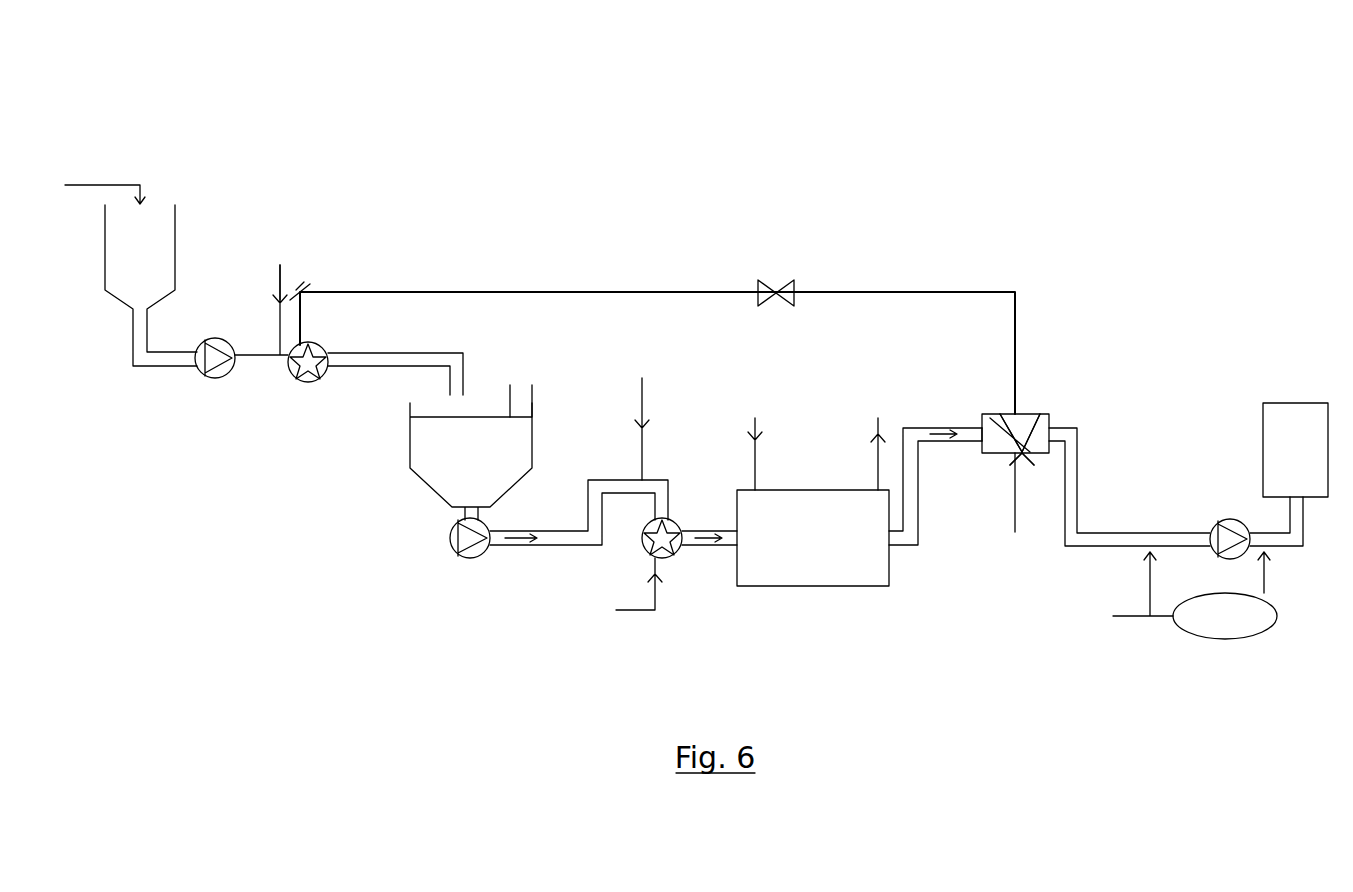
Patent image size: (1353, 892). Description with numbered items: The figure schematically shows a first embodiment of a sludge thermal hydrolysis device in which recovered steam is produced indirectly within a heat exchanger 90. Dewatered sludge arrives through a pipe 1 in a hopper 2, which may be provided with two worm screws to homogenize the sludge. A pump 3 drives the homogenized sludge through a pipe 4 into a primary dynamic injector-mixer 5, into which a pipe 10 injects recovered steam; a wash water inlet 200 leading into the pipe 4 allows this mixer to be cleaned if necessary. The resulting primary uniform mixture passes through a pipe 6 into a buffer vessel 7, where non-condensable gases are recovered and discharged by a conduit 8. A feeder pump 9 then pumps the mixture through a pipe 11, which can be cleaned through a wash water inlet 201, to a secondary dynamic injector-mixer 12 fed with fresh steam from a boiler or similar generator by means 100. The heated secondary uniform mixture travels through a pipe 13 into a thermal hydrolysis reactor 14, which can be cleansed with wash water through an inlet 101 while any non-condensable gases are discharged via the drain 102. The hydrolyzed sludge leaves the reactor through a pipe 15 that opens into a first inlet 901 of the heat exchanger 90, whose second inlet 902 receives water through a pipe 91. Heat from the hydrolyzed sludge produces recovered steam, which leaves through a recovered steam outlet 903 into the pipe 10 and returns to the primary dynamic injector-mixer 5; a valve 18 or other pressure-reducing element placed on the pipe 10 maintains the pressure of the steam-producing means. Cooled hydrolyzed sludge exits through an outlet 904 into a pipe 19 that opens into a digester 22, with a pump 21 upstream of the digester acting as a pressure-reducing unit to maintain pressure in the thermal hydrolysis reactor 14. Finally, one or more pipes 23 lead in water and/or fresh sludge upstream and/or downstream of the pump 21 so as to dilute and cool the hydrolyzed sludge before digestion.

The pipe 1 is at (110, 183).
The hopper 2 is at (130, 287).
The pump 3 is at (217, 380).
The pipe 4 is at (266, 352).
The wash water inlet 200 is at (275, 272).
The primary dynamic injector-mixer 5 is at (300, 385).
The pipe 6 is at (372, 370).
The buffer vessel 7 is at (430, 468).
The conduit 8 is at (512, 400).
The feeder pump 9 is at (458, 555).
The pipe 11 is at (555, 548).
The wash water inlet 201 is at (643, 417).
The secondary dynamic injector-mixer 12 is at (670, 560).
The means for injecting fresh steam 100 is at (630, 612).
The pipe 13 is at (710, 548).
The thermal hydrolysis reactor 14 is at (806, 590).
The wash water inlet 101 is at (755, 441).
The drain 102 is at (877, 441).
The pipe 15 is at (912, 548).
The heat exchanger 90 is at (1040, 418).
The first inlet 901 is at (948, 446).
The second inlet 902 is at (1010, 458).
The recovered steam outlet 903 is at (1020, 414).
The outlet for cooled hydrolyzed sludge 904 is at (1050, 430).
The pipe 91 is at (1015, 535).
The recovered steam injection pipe 10 is at (512, 290).
The valve 18 is at (790, 280).
The pipe 19 is at (1085, 477).
The pump 21 is at (1225, 520).
The digester 22 is at (1305, 420).
The pipes for leading in water and/or fresh sludge 23 is at (1136, 618).